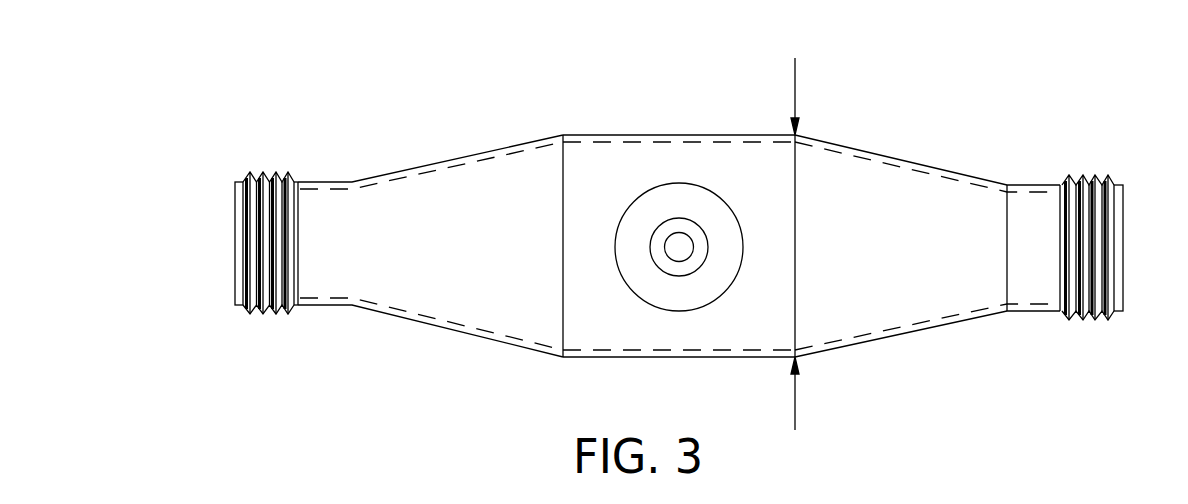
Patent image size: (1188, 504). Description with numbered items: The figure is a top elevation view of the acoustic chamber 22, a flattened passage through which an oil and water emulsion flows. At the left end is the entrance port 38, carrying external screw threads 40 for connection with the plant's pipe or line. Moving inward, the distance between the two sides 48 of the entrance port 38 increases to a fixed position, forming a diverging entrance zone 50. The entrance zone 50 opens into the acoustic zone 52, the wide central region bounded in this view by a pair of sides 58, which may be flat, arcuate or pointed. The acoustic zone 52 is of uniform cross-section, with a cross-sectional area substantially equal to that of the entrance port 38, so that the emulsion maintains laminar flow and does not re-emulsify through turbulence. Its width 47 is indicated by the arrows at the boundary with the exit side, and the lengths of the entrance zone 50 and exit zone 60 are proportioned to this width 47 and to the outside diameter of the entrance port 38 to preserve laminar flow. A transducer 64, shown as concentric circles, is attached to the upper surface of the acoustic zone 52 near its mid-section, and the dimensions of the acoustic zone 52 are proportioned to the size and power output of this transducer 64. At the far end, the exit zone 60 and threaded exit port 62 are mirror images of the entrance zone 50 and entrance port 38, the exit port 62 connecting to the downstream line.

The acoustic chamber 22 is at (868, 154).
The entrance port 38 is at (234, 229).
The external screw threads 40 is at (259, 177).
The width of the acoustic zone 47 is at (799, 246).
The sides of the entrance port 48 is at (474, 155).
The entrance zone 50 is at (490, 260).
The acoustic zone 52 is at (772, 186).
The sides of the acoustic zone 58 is at (650, 135).
The exit zone 60 is at (899, 253).
The exit port 62 is at (1123, 210).
The transducer 64 is at (700, 268).